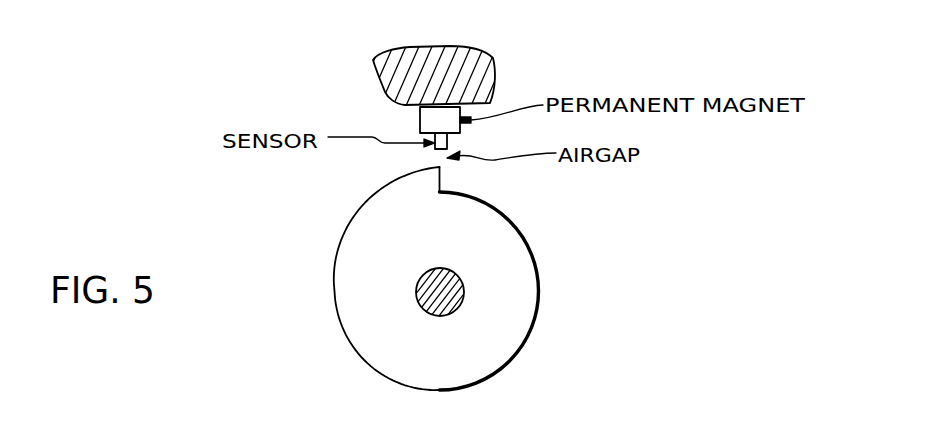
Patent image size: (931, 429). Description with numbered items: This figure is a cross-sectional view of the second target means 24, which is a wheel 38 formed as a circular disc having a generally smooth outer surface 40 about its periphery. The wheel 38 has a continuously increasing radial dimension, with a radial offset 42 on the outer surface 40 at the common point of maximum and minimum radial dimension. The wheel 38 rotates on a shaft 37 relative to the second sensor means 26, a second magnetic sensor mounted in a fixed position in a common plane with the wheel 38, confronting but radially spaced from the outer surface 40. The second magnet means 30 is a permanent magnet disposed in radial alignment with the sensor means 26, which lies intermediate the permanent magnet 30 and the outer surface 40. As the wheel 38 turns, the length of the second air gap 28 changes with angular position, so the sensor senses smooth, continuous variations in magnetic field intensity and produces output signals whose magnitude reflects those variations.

The second target means 24 is at (485, 275).
The second sensor means 26 is at (448, 142).
The second air gap 28 is at (435, 161).
The second magnet means 30 is at (446, 114).
The shaft 37 is at (447, 292).
The wheel 38 is at (500, 240).
The outer surface 40 is at (514, 359).
The radial offset 42 is at (442, 179).